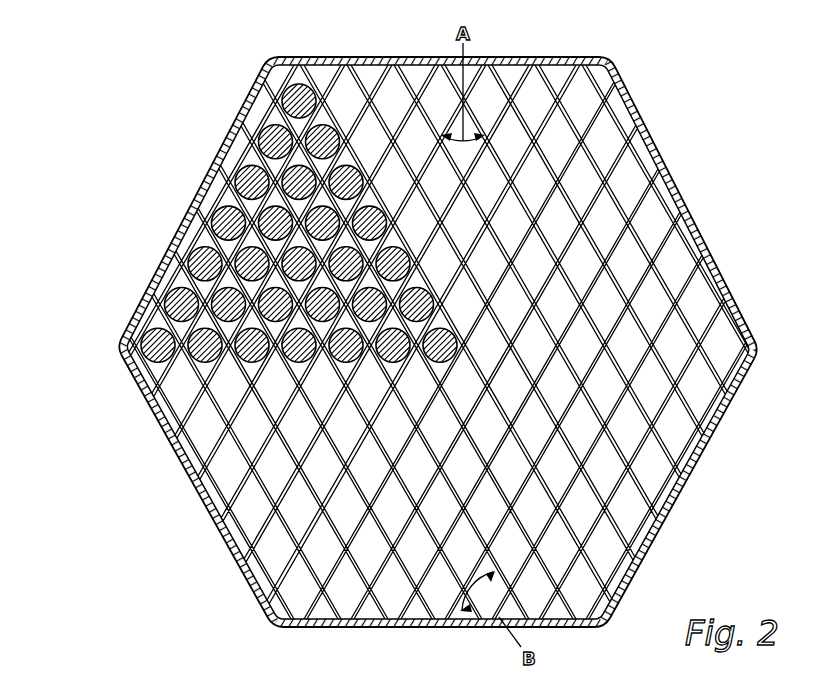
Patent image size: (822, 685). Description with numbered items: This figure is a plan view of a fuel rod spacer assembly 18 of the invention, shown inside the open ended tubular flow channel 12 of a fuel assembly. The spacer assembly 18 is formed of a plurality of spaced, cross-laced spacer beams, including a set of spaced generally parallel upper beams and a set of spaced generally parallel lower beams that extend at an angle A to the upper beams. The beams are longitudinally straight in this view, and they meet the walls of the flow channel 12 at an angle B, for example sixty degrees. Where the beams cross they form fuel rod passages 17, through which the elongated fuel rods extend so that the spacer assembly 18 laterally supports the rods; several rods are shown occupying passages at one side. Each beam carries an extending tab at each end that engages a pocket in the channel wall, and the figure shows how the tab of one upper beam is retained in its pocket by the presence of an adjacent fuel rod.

The flow channel 12 is at (668, 176).
The fuel rod passages 17 is at (225, 478).
The spacer assembly 18 is at (393, 342).